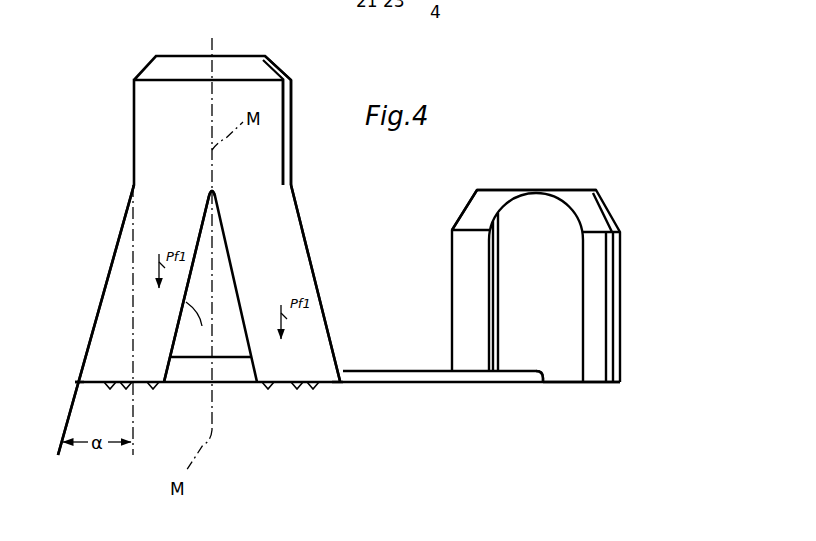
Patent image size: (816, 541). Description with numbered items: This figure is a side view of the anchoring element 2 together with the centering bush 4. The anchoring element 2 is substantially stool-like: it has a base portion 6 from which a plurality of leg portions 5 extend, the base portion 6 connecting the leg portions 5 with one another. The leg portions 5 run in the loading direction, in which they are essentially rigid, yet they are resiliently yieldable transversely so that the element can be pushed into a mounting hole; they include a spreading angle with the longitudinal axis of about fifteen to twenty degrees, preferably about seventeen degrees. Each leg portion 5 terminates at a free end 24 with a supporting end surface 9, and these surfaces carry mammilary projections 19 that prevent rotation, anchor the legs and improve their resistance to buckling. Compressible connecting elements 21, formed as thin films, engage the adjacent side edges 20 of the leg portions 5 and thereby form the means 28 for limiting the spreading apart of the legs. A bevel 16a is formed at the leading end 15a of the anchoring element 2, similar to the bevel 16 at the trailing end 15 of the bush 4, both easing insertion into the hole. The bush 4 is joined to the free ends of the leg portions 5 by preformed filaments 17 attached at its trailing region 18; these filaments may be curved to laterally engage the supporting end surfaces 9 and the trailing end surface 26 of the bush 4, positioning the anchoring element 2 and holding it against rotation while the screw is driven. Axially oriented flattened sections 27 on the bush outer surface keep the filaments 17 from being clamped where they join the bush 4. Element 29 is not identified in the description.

The anchoring element 2 is at (106, 188).
The centering bush 4 is at (571, 176).
The leg portions 5 is at (110, 339).
The base portion 6 is at (290, 118).
The supporting end surfaces 9 is at (141, 390).
The trailing end 15 is at (496, 178).
The leading end 15a is at (150, 46).
The bevel 16 is at (484, 209).
The bevel 16a is at (277, 64).
The filaments 17 is at (430, 374).
The trailing region 18 is at (533, 390).
The mammilary projections 19 is at (118, 389).
The side edges 20 is at (197, 327).
The connecting elements 21 is at (201, 322).
The free end 24 is at (71, 384).
The trailing end surface 26 is at (560, 392).
The flattened sections 27 is at (558, 307).
The means for limiting spreading 28 is at (226, 269).
The inclined flank 29 is at (301, 188).